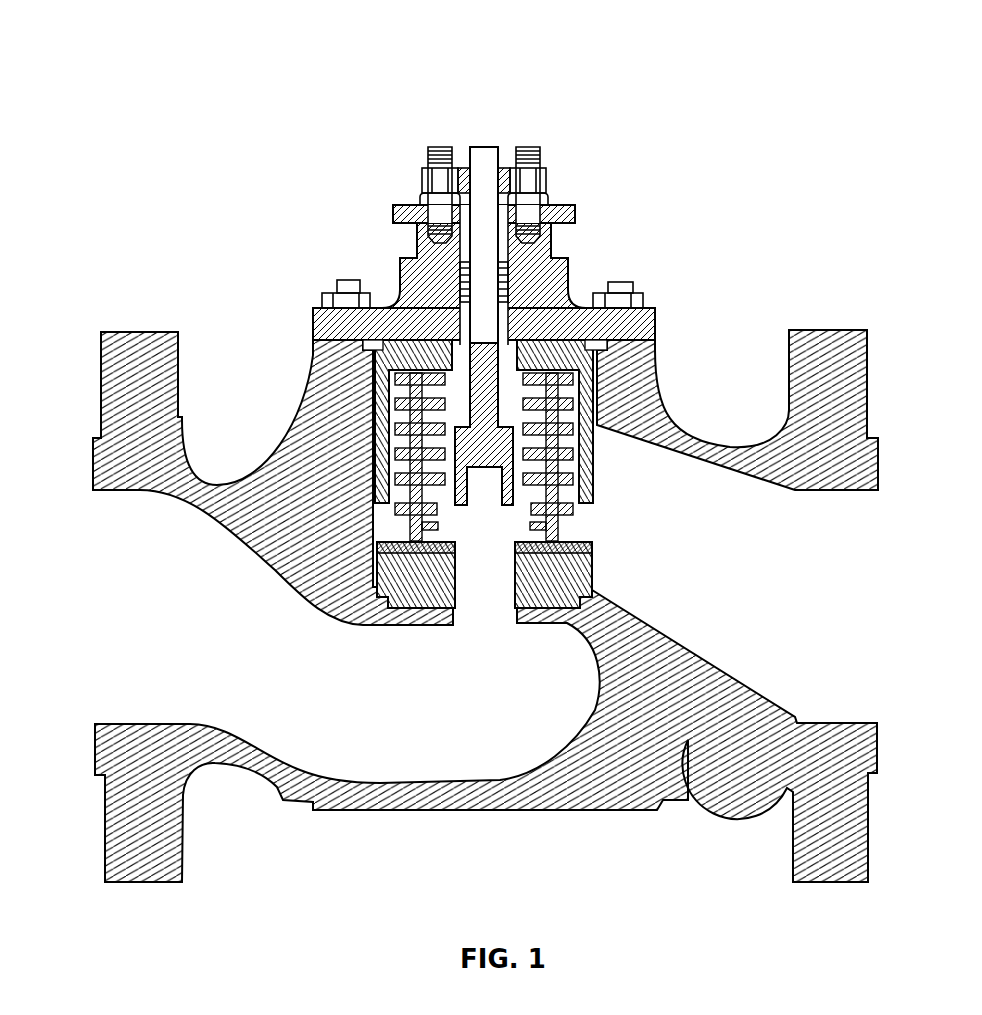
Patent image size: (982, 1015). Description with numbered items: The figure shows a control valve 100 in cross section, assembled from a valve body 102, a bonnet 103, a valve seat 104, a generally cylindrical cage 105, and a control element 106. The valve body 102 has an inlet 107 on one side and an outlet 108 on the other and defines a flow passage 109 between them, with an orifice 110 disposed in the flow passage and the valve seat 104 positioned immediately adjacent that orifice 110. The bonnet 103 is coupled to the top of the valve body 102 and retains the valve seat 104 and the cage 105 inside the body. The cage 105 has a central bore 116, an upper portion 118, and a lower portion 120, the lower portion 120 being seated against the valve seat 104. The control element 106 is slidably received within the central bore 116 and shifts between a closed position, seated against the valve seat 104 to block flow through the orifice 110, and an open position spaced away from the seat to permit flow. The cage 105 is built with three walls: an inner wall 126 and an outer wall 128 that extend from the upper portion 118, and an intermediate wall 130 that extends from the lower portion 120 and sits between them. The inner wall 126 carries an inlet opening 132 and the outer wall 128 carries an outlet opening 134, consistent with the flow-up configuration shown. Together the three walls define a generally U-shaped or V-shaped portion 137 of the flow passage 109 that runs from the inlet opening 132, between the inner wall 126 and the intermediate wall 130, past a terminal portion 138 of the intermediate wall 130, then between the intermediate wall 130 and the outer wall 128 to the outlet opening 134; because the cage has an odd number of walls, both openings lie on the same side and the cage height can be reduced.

The control valve 100 is at (130, 38).
The valve body 102 is at (113, 372).
The bonnet 103 is at (427, 288).
The valve seat 104 is at (593, 570).
The cage 105 is at (597, 383).
The control element 106 is at (478, 442).
The inlet 107 is at (108, 738).
The outlet 108 is at (880, 492).
The flow passage 109 is at (782, 581).
The orifice 110 is at (447, 615).
The central bore 116 is at (460, 272).
The upper portion 118 is at (597, 350).
The lower portion 120 is at (383, 547).
The inner wall 126 is at (593, 465).
The outer wall 128 is at (588, 480).
The intermediate wall 130 is at (412, 478).
The inlet opening 132 is at (513, 543).
The outlet opening 134 is at (588, 505).
The portion of the flow passage 137 is at (443, 432).
The terminal portion 138 is at (597, 372).